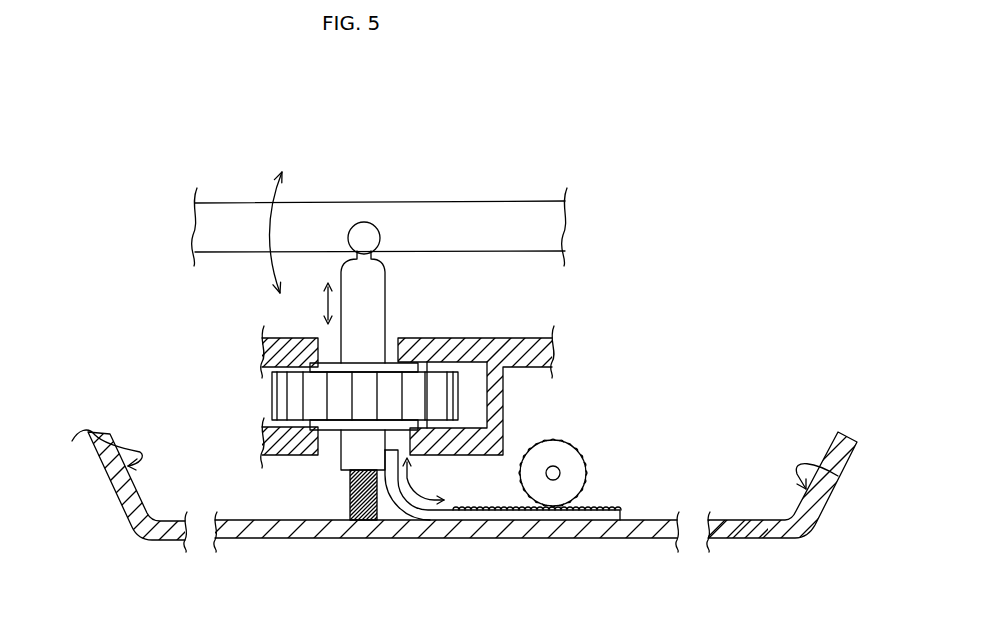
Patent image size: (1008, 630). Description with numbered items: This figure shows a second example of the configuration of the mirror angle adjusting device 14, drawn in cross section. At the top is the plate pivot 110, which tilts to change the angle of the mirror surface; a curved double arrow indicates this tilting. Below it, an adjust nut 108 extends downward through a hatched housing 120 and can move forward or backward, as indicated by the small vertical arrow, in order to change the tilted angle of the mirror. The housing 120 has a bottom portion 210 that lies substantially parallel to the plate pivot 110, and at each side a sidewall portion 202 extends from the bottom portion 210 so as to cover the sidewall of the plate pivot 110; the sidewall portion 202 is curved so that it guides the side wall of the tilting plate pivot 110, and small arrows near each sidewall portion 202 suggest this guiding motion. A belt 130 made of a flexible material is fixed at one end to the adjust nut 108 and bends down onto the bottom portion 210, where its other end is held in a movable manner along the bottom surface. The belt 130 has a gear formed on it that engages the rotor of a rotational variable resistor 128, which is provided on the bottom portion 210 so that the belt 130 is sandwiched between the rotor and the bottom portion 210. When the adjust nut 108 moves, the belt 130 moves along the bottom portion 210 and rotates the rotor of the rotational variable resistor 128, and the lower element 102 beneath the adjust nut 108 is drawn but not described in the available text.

The mirror angle adjusting device 14 is at (808, 95).
The shaft 102 is at (348, 503).
The adjust nut 108 is at (378, 310).
The plate pivot 110 is at (494, 214).
The housing 120 is at (518, 338).
The rotational variable resistor 128 is at (577, 466).
The belt 130 is at (617, 504).
The sidewall portion 202 is at (106, 446).
The bottom portion 210 is at (674, 520).